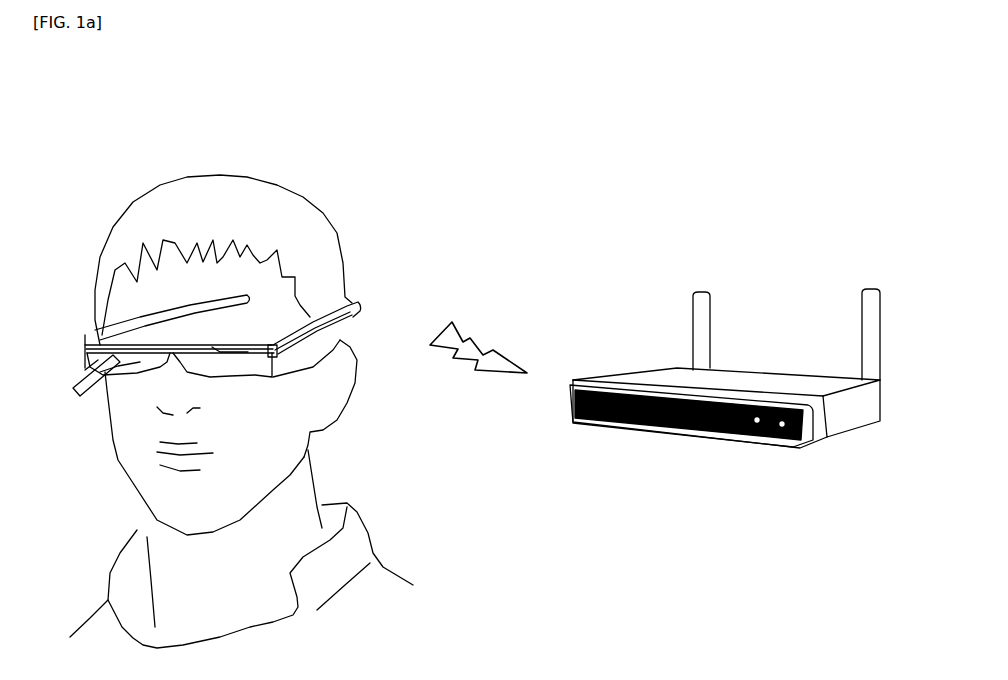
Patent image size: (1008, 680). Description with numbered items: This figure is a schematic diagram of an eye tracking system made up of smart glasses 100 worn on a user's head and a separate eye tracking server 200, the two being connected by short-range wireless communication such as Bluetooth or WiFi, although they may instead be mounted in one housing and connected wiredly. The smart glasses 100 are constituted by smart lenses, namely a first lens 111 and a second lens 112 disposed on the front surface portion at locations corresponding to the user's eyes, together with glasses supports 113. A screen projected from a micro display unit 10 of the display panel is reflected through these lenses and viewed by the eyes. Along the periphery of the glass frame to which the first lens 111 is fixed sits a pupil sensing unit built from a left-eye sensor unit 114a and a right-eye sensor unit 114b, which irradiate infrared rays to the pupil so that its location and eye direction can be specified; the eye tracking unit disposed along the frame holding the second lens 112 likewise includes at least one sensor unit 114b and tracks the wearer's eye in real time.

The micro display unit 10 is at (223, 177).
The smart glasses 100 is at (160, 397).
The first lens 111 is at (137, 367).
The second lens 112 is at (217, 371).
The glasses supports 113 is at (213, 296).
The left-eye sensor unit 114a is at (95, 380).
The right-eye sensor unit 114b is at (213, 348).
The eye tracking server 200 is at (787, 447).